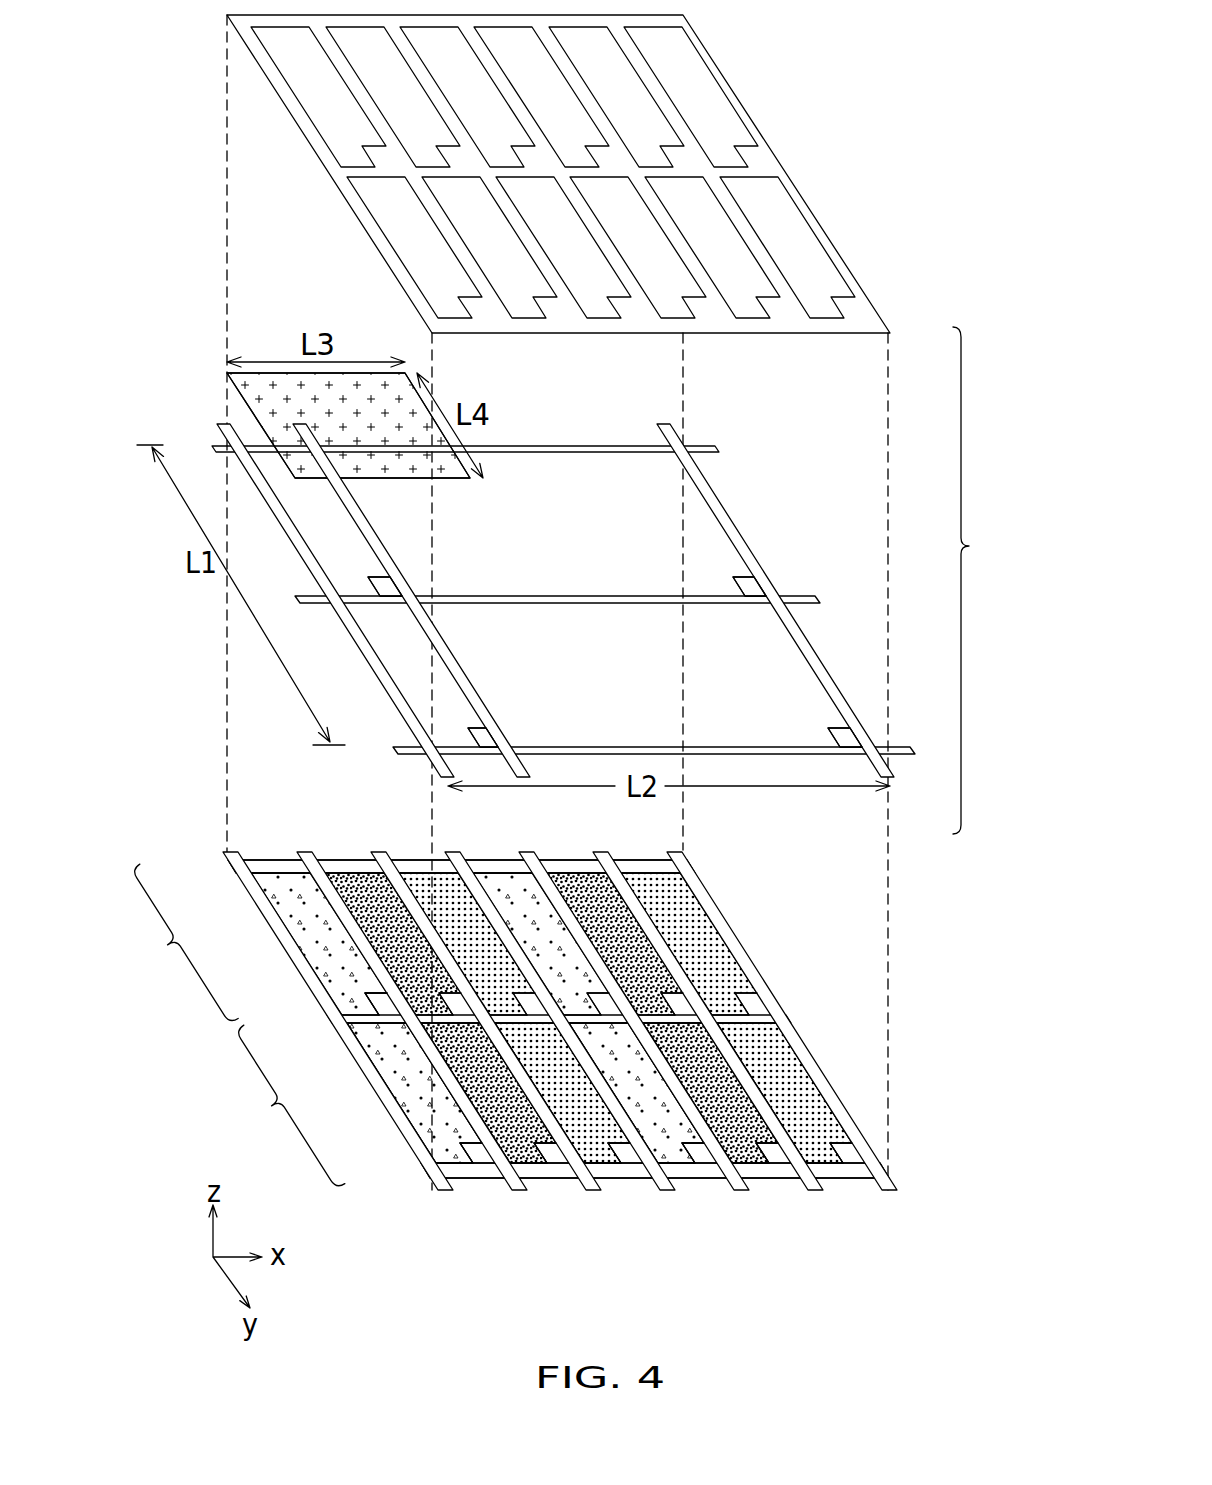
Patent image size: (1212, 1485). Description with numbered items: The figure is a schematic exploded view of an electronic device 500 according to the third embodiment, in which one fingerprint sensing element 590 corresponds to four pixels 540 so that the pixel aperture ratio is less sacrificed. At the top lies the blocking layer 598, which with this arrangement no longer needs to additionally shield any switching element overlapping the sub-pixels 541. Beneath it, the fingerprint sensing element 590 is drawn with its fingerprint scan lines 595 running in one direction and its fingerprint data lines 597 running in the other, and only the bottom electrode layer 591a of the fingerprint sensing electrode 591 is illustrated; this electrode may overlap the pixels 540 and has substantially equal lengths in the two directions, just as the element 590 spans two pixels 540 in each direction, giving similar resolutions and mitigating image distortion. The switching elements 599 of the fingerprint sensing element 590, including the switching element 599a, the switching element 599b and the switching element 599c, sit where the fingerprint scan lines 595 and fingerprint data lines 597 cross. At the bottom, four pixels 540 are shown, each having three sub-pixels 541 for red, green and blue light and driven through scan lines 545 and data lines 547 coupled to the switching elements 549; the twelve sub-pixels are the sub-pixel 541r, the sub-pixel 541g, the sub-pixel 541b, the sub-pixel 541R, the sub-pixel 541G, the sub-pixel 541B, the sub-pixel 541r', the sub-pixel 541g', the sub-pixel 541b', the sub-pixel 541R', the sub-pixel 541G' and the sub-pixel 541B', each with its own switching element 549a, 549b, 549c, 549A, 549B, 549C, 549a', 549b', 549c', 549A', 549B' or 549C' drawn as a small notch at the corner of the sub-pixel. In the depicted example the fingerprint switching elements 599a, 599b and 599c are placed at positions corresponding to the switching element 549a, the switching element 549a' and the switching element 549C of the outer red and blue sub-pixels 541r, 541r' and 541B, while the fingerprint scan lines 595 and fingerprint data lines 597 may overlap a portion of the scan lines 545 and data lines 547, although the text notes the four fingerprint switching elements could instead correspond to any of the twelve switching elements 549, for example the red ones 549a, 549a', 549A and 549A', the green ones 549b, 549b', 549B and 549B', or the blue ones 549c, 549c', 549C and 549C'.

The electronic device 500 is at (856, 62).
The blocking layer 598 is at (808, 200).
The fingerprint sensing element 590 is at (969, 546).
The fingerprint sensing electrode 591 is at (304, 425).
The bottom electrode layer 591a is at (230, 378).
The fingerprint scan line 595 is at (700, 444).
The fingerprint data line 597 is at (425, 620).
The switching elements 599 is at (615, 633).
The switching element 599a is at (483, 737).
The switching element 599b is at (752, 585).
The switching element 599c is at (383, 587).
The pixel 540 is at (159, 944).
The sub-pixel 541 is at (587, 1163).
The red sub-pixel 541r is at (417, 1147).
The green sub-pixel 541g is at (522, 1147).
The blue sub-pixel 541b is at (597, 1147).
The red sub-pixel 541R is at (678, 1147).
The green sub-pixel 541G is at (759, 1147).
The blue sub-pixel 541B is at (868, 1093).
The red sub-pixel 541r' is at (275, 944).
The green sub-pixel 541g' is at (359, 913).
The blue sub-pixel 541b' is at (471, 915).
The red sub-pixel 541R' is at (550, 915).
The green sub-pixel 541G' is at (678, 944).
The blue sub-pixel 541B' is at (715, 937).
The scan line 545 is at (668, 858).
The data line 547 is at (793, 1037).
The switching element 549 is at (306, 1006).
The switching element 549a is at (460, 1190).
The switching element 549b is at (558, 1190).
The switching element 549c is at (637, 1190).
The switching element 549A is at (715, 1190).
The switching element 549B is at (790, 1190).
The switching element 549C is at (900, 1147).
The switching element 549a' is at (307, 986).
The switching element 549b' is at (398, 900).
The switching element 549c' is at (459, 915).
The switching element 549A' is at (707, 970).
The switching element 549B' is at (752, 986).
The switching element 549C' is at (801, 1006).